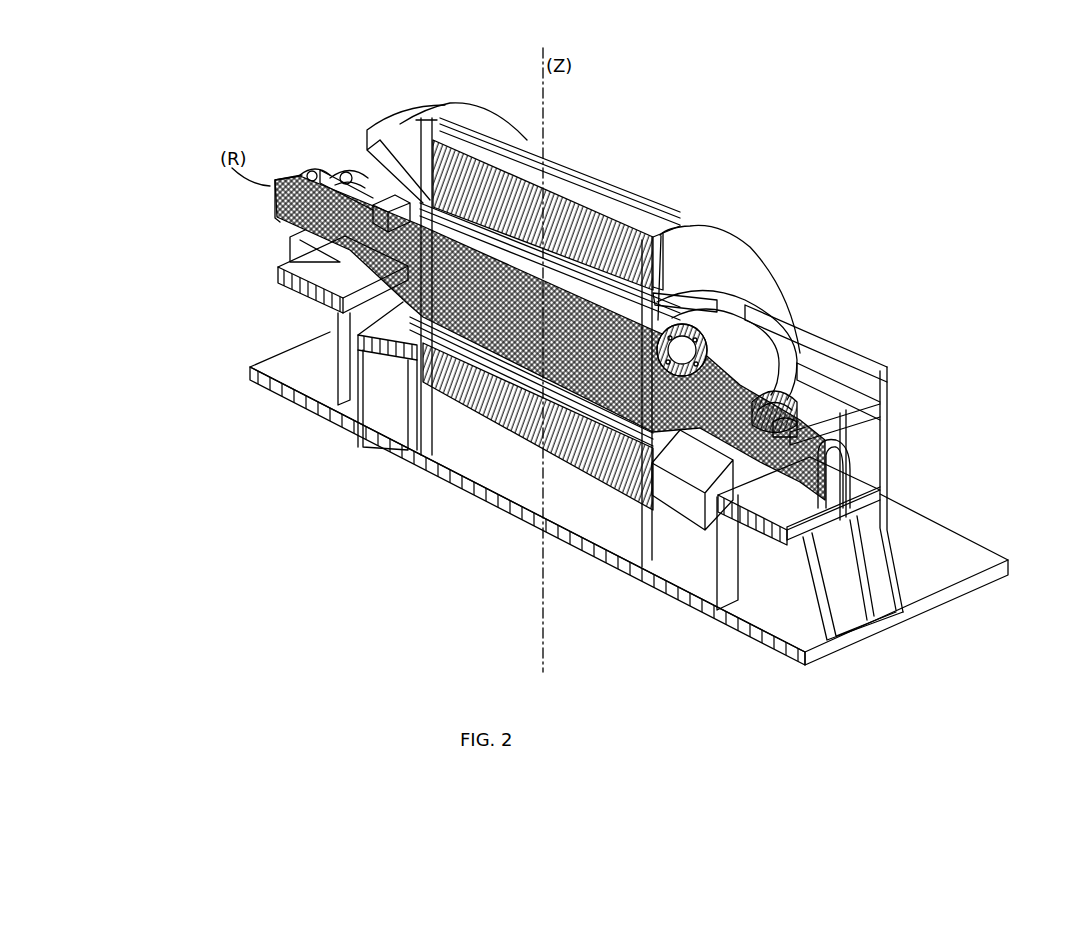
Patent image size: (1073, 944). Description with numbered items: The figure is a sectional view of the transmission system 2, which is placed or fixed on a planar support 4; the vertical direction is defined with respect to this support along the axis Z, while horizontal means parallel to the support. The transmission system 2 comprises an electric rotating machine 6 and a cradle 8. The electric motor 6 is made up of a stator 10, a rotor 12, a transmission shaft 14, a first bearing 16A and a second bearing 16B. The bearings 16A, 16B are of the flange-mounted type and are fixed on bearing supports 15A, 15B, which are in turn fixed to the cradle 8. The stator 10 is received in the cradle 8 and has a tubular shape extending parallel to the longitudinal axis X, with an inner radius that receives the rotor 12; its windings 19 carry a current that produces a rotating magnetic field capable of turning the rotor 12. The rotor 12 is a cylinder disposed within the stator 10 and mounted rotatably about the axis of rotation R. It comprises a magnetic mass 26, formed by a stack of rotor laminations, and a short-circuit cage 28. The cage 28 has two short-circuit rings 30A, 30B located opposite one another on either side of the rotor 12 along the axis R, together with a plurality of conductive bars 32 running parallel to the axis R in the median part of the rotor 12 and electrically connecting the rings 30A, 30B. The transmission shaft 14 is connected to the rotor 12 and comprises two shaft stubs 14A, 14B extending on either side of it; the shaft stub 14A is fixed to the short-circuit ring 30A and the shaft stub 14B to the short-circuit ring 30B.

The transmission system 2 is at (910, 183).
The planar support 4 is at (970, 572).
The electric rotating machine 6 is at (575, 145).
The cradle 8 is at (893, 398).
The stator 10 is at (630, 228).
The rotor 12 is at (718, 366).
The transmission shaft 14 is at (852, 477).
The shaft stub 14A is at (275, 212).
The shaft stub 14B is at (838, 447).
The bearing support 15A is at (340, 302).
The bearing support 15B is at (763, 542).
The first bearing 16A is at (310, 172).
The second bearing 16B is at (795, 405).
The windings 19 is at (400, 133).
The magnetic mass 26 is at (517, 525).
The short-circuit cage 28 is at (720, 338).
The short-circuit ring 30A is at (365, 442).
The short-circuit ring 30B is at (605, 520).
The conductive bars 32 is at (443, 430).